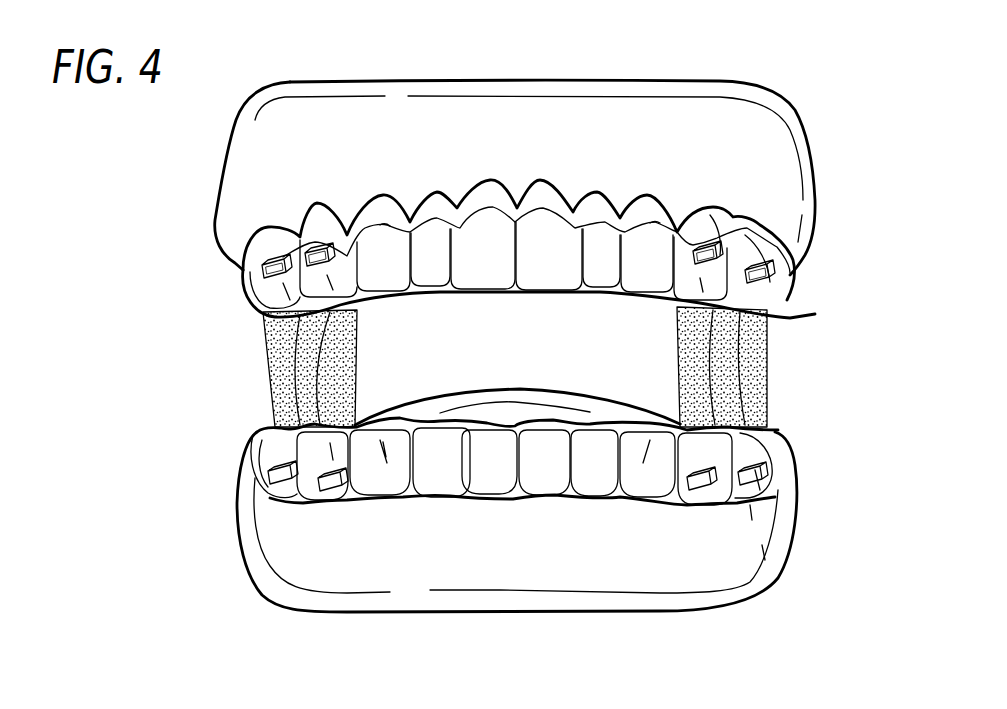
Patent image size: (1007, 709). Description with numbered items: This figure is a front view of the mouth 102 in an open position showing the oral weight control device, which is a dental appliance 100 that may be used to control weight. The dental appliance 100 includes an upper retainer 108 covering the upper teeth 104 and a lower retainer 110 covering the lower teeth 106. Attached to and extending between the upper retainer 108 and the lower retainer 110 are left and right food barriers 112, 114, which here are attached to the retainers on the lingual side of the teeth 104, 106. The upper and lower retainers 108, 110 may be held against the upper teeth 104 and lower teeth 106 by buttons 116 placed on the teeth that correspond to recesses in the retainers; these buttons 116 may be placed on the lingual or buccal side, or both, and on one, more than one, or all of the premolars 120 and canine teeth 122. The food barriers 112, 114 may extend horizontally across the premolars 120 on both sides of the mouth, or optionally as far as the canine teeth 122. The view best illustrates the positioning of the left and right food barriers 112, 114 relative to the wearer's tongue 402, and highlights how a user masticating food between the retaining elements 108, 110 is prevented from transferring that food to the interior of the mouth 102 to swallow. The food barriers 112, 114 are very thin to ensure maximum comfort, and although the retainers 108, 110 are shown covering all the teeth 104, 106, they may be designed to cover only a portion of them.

The dental appliance 100 is at (831, 135).
The mouth 102 is at (504, 120).
The upper teeth 104 is at (547, 193).
The lower teeth 106 is at (553, 477).
The upper retainer 108 is at (447, 300).
The lower retainer 110 is at (548, 425).
The left food barrier 112 is at (757, 365).
The right food barrier 114 is at (275, 374).
The buttons 116 is at (322, 254).
The premolars 120 is at (265, 240).
The canine teeth 122 is at (387, 203).
The tongue 402 is at (520, 390).